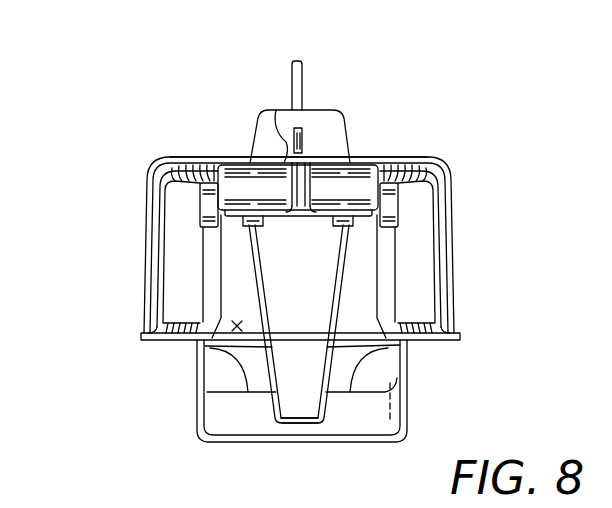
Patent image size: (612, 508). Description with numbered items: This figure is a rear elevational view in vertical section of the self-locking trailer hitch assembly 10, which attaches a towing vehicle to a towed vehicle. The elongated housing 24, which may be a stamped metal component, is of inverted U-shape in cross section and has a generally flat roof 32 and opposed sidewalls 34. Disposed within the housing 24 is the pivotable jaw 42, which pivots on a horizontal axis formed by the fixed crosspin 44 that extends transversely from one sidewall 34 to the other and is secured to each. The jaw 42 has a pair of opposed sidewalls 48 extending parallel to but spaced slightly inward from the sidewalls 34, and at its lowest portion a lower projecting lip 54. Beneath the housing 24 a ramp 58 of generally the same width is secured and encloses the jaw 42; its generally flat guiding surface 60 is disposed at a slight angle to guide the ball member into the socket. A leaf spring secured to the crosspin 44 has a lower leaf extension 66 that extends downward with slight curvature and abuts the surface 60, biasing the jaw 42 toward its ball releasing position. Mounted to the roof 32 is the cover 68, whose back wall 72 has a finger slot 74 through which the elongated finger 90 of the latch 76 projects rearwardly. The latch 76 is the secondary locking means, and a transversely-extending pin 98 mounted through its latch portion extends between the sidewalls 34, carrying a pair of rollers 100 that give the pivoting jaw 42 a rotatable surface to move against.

The self-locking trailer hitch assembly 10 is at (133, 129).
The housing 24 is at (117, 237).
The roof 32 is at (174, 150).
The sidewalls 34 is at (147, 207).
The pivotable jaw 42 is at (205, 347).
The crosspin 44 is at (210, 238).
The sidewalls of jaw 48 is at (217, 277).
The lower projecting lip 54 is at (213, 396).
The ramp 58 is at (403, 397).
The guiding surface 60 is at (310, 443).
The lower leaf extension 66 is at (272, 407).
The cover 68 is at (346, 78).
The back wall 72 is at (270, 127).
The finger slot 74 is at (285, 115).
The latch 76 is at (300, 60).
The finger 90 is at (306, 141).
The pin 98 is at (264, 166).
The rollers 100 is at (189, 168).